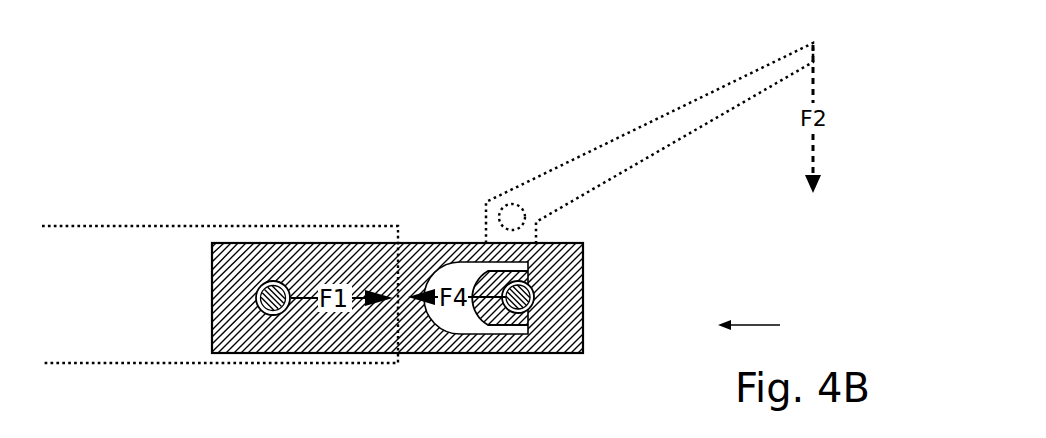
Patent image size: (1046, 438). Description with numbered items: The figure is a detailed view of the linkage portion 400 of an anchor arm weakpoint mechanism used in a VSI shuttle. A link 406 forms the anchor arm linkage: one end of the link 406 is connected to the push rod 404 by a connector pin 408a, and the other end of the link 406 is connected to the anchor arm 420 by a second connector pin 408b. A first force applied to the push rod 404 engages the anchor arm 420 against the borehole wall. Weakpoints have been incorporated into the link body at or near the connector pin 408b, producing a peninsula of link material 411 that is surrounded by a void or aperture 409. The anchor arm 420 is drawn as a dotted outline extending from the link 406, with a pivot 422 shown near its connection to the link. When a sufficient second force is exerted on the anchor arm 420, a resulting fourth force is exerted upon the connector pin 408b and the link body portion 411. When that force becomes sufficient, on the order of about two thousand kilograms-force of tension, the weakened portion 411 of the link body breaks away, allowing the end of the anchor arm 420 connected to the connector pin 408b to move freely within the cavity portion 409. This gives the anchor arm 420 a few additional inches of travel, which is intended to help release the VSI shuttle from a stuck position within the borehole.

The linkage portion 400 is at (769, 325).
The push rod 404 is at (90, 226).
The link 406 is at (323, 243).
The connector pin 408a is at (275, 307).
The connector pin 408b is at (513, 305).
The void or aperture 409 is at (423, 350).
The peninsula of link material 411 is at (483, 318).
The anchor arm 420 is at (578, 155).
The pivot 422 is at (510, 204).